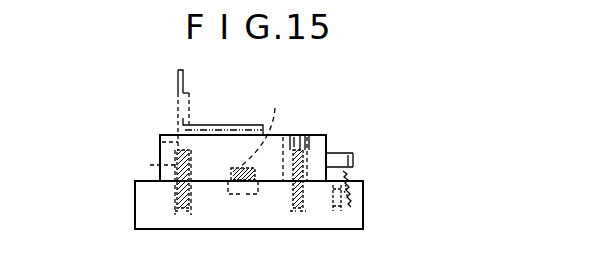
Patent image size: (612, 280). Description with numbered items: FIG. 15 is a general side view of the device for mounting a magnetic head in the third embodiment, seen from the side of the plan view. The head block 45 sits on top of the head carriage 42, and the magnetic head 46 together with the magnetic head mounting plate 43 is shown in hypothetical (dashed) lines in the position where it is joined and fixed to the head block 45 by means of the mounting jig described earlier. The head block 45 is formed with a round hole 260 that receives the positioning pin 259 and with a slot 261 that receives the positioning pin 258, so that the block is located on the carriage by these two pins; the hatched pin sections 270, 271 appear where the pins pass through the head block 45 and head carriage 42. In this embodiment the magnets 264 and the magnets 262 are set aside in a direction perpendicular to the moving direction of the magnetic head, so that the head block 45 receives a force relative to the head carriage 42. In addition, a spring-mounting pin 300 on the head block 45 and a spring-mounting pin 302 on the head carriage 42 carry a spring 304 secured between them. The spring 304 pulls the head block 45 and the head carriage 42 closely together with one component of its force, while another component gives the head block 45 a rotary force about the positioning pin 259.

The head carriage 42 is at (364, 193).
The magnetic head mounting plate 43 is at (200, 128).
The head block 45 is at (326, 134).
The magnetic head 46 is at (172, 85).
The positioning pin 258 is at (303, 194).
The positioning pin 259 is at (150, 167).
The round hole 260 is at (158, 140).
The slot 261 is at (304, 136).
The magnets 262 is at (238, 195).
The magnets 264 is at (263, 123).
The left bolt 270 is at (177, 212).
The right bolt 271 is at (290, 182).
The spring-mounting pin 300 is at (351, 155).
The spring-mounting pin 302 is at (365, 206).
The spring 304 is at (349, 170).